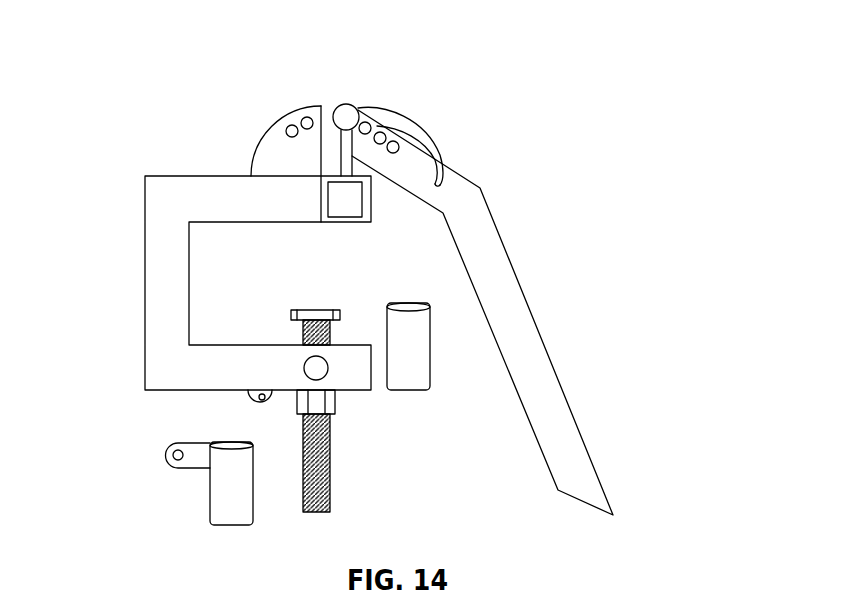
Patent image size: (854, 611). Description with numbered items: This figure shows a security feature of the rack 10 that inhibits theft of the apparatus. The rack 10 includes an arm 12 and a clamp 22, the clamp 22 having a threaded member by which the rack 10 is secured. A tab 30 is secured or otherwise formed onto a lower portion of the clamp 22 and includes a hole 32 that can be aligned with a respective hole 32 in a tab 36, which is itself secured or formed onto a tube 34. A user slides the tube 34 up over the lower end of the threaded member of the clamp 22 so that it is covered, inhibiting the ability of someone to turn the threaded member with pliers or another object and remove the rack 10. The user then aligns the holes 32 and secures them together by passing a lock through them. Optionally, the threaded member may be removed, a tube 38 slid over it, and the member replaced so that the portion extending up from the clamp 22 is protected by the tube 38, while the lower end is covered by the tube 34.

The rack 10 is at (98, 65).
The arm 12 is at (523, 317).
The clamp 22 is at (117, 274).
The tab 30 is at (248, 393).
The hole 32 is at (450, 177).
The tube 34 is at (230, 520).
The tab 36 is at (190, 458).
The tube 38 is at (433, 140).